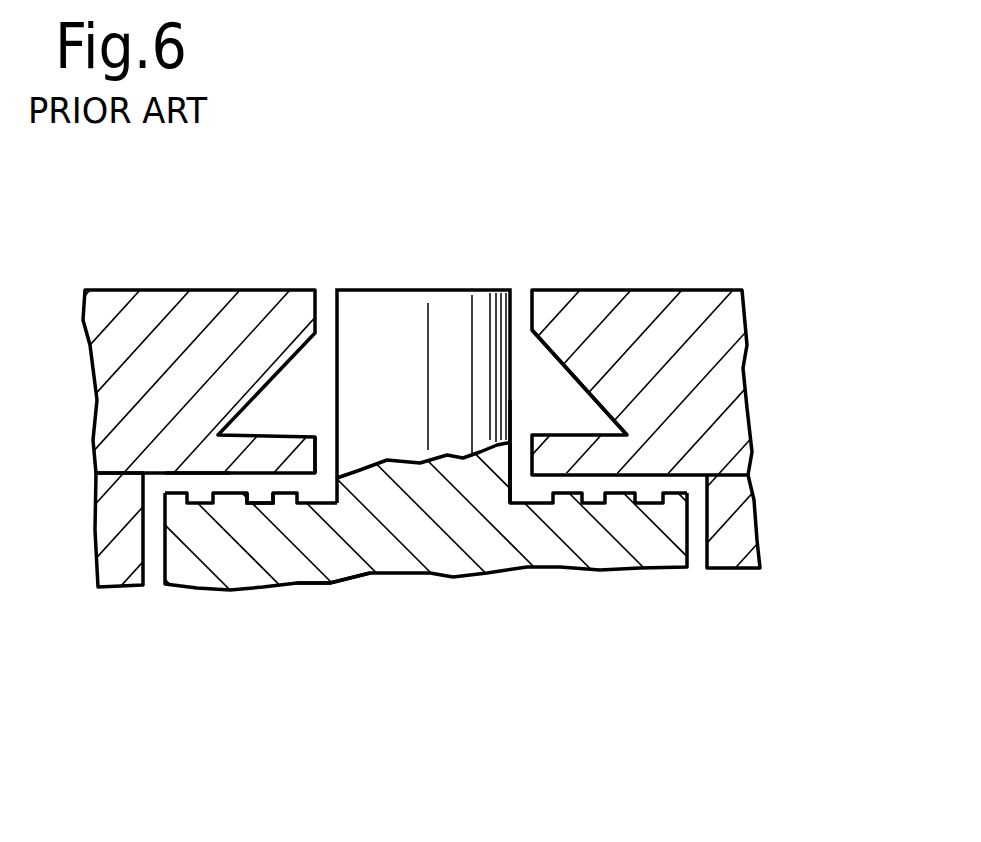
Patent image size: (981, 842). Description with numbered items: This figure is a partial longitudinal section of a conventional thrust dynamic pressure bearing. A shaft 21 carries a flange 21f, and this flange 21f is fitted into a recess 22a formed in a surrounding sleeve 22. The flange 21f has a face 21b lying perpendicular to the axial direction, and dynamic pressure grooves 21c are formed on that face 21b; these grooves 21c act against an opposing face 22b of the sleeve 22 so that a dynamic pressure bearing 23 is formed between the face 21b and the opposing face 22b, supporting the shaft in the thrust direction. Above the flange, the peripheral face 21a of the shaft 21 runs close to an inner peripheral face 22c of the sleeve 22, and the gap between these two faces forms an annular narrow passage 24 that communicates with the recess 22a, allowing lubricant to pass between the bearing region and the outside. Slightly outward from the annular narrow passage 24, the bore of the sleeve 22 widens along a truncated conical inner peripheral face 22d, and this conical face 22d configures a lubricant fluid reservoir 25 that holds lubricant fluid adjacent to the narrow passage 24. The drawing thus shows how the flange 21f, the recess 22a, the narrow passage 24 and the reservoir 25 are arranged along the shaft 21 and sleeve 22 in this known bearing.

The shaft 21 is at (440, 327).
The peripheral face of the shaft 21a is at (517, 412).
The face of the flange 21b is at (225, 497).
The dynamic pressure grooves 21c is at (260, 503).
The flange 21f is at (217, 553).
The sleeve 22 is at (703, 400).
The recess 22a is at (660, 480).
The opposing face of the sleeve 22b is at (318, 510).
The inner peripheral face of the sleeve 22c is at (497, 462).
The truncated conical inner peripheral face 22d is at (552, 360).
The dynamic pressure bearing 23 is at (196, 499).
The annular narrow passage 24 is at (327, 447).
The lubricant fluid reservoir 25 is at (326, 400).